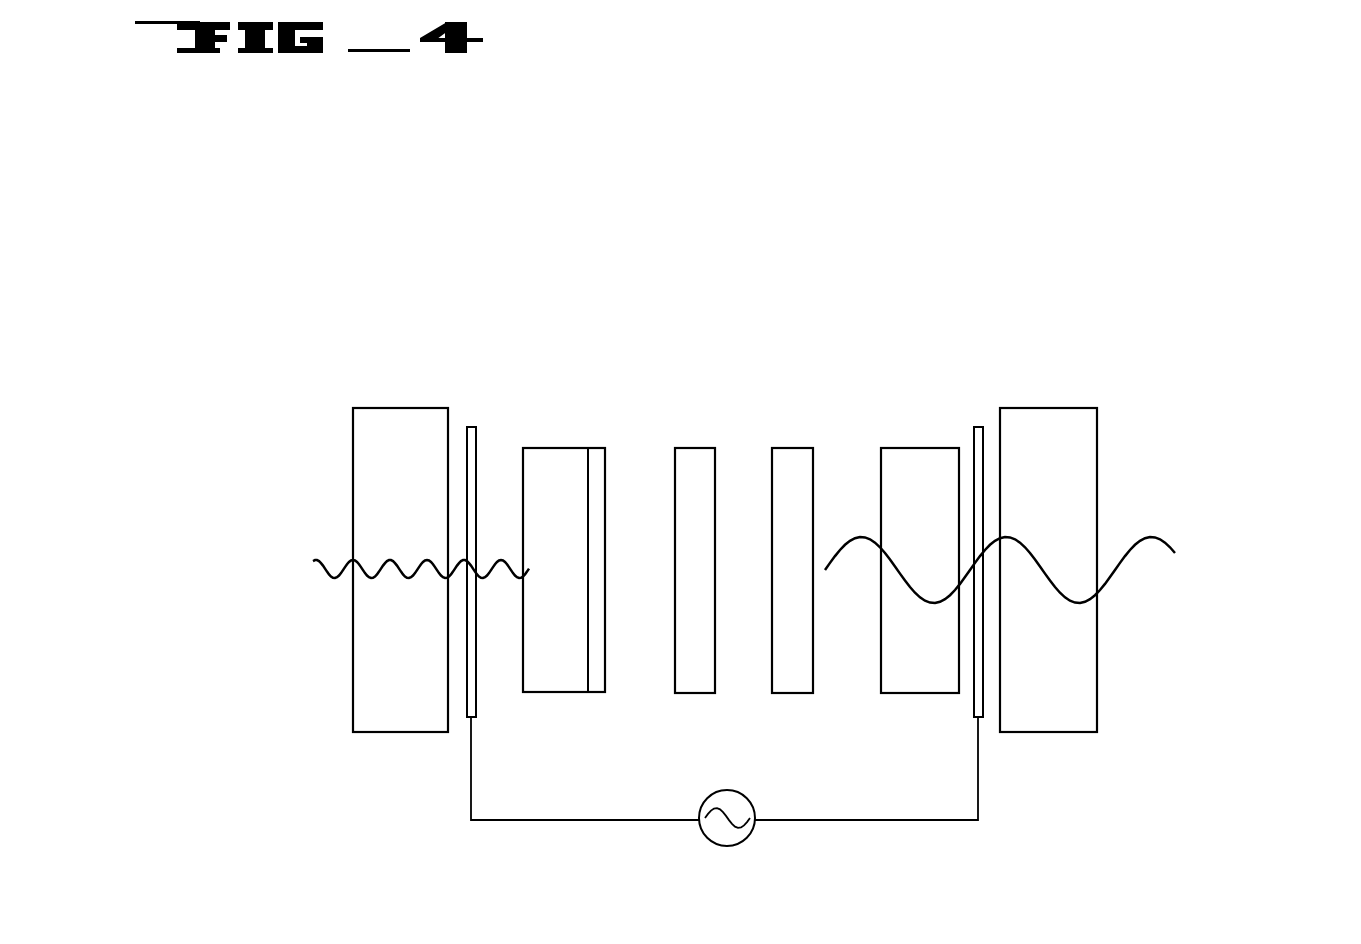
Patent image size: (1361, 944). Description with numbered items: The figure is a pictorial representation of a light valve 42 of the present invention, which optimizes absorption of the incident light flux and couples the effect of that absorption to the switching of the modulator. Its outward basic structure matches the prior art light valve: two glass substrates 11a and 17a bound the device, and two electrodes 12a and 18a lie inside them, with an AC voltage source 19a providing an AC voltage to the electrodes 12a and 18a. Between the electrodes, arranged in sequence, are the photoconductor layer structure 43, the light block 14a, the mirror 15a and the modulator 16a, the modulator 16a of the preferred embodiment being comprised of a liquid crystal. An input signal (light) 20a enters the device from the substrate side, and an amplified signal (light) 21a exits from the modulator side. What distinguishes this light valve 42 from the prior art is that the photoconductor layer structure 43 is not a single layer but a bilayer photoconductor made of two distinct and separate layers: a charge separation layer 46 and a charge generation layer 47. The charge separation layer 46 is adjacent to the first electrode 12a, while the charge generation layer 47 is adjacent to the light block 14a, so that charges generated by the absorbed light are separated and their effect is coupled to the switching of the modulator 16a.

The light valve 42 is at (623, 130).
The glass substrate 11a is at (402, 400).
The electrode 12a is at (471, 427).
The photoconductor layer structure 43 is at (555, 448).
The charge separation layer 46 is at (558, 692).
The charge generation layer 47 is at (597, 692).
The light block 14a is at (698, 448).
The mirror 15a is at (793, 448).
The modulator 16a is at (938, 448).
The electrode 18a is at (979, 427).
The glass substrate 17a is at (1051, 400).
The AC voltage source 19a is at (745, 843).
The input signal (light) 20a is at (305, 564).
The amplified signal (light) 21a is at (1255, 552).